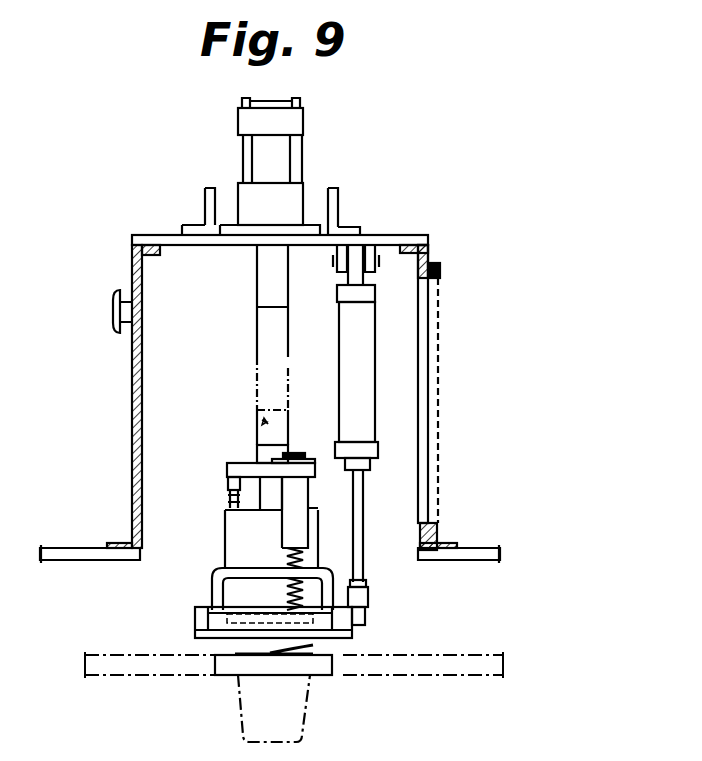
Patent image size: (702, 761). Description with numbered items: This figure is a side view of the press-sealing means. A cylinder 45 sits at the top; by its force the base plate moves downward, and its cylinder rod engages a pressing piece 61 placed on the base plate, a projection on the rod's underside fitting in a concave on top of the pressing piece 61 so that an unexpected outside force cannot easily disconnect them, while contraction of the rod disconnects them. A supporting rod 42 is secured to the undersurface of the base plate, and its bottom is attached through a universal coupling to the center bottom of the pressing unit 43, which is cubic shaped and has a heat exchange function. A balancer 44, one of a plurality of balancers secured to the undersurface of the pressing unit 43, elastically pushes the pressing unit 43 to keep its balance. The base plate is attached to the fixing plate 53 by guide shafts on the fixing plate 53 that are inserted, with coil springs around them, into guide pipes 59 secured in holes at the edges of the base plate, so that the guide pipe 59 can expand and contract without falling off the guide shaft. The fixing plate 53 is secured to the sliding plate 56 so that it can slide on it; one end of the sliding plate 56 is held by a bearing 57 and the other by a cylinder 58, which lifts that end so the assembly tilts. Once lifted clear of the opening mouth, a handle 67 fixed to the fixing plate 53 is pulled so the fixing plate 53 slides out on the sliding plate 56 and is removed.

The cylinder 45 is at (278, 157).
The cylinder 58 is at (360, 362).
The pressing piece 61 is at (262, 453).
The balancer 44 is at (228, 485).
The guide pipe 59 is at (302, 497).
The supporting rod 42 is at (272, 502).
The pressing unit 43 is at (245, 553).
The handle 67 is at (330, 578).
The bearing 57 is at (367, 605).
The fixing plate 53 is at (203, 608).
The sliding plate 56 is at (208, 628).